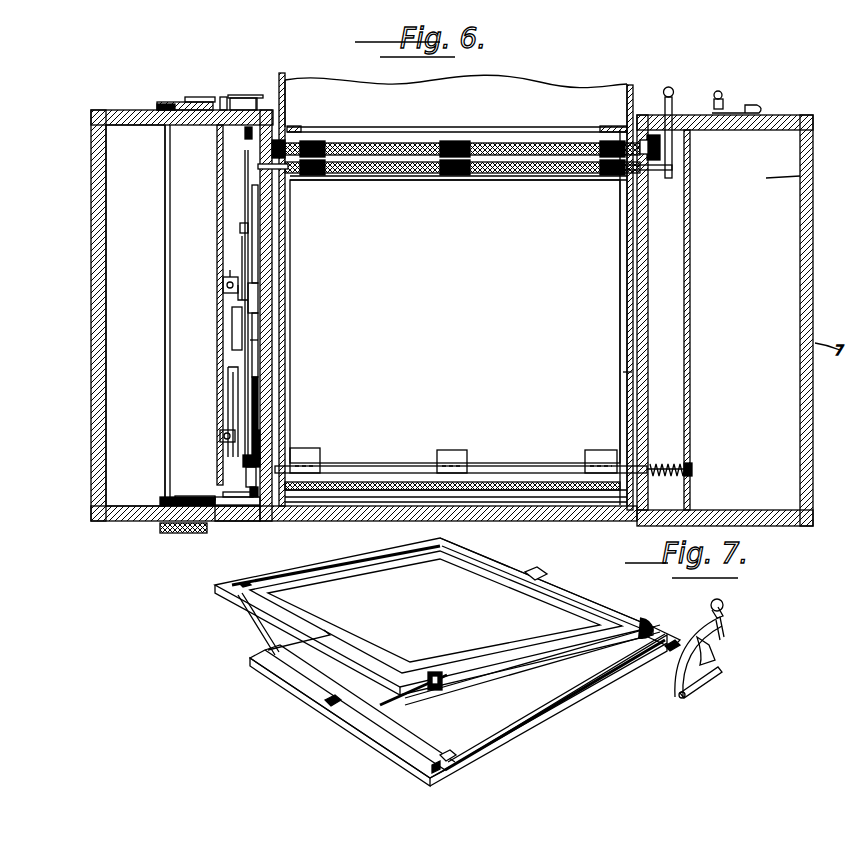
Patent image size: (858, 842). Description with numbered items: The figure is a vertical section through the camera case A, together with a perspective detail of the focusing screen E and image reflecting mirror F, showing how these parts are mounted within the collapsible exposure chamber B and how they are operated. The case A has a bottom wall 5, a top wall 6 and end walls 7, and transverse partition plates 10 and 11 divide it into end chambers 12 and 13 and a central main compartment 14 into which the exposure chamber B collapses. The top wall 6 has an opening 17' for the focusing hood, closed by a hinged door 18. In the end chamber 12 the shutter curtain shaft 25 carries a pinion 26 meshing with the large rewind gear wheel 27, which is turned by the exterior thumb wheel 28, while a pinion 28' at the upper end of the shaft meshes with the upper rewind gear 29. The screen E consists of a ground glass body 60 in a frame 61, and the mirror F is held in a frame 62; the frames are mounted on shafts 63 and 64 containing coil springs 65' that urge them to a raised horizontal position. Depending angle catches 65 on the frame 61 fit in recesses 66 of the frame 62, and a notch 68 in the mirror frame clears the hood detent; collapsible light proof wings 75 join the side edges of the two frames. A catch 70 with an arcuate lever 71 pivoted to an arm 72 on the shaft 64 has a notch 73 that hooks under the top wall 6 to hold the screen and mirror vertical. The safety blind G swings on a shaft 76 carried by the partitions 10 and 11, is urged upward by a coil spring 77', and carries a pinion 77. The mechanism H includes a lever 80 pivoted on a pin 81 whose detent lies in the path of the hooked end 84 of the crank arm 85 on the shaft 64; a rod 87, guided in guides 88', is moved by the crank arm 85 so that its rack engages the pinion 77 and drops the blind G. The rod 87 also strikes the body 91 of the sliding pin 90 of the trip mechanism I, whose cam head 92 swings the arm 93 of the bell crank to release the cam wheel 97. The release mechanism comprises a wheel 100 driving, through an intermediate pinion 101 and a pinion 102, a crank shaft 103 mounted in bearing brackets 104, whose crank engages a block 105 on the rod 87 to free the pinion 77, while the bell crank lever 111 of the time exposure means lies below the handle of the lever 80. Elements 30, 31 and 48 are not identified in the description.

In FIG. 6, the bottom wall 5 is at (266, 521).
In FIG. 6, the top wall 6 is at (128, 112).
In FIG. 6, the end walls 7 is at (92, 306).
In FIG. 6, the partition plate 10 is at (272, 416).
In FIG. 6, the partition plate 11 is at (690, 300).
In FIG. 6, the end chamber 12 is at (152, 229).
In FIG. 6, the end chamber 13 is at (815, 176).
In FIG. 6, the central main compartment 14 is at (648, 224).
In FIG. 6, the opening 17' is at (644, 291).
In FIG. 6, the hinged door 18 is at (576, 88).
In FIG. 6, the shaft 25 is at (166, 380).
In FIG. 6, the pinion 26 is at (165, 497).
In FIG. 6, the gear wheel 27 is at (160, 501).
In FIG. 6, the thumb wheel 28 is at (187, 537).
In FIG. 6, the pinion 28' is at (165, 95).
In FIG. 6, the upper rewind gear 29 is at (210, 127).
In FIG. 6, the rail 30 is at (330, 481).
In FIG. 6, the rail 31 is at (296, 128).
In FIG. 6, the frame member 48 is at (627, 298).
In FIG. 7, the ground glass body 60 is at (490, 578).
In FIG. 7, the frame 61 is at (540, 578).
In FIG. 7, the frame 62 is at (520, 725).
In FIG. 6, the shaft 63 is at (430, 143).
In FIG. 7, the shaft 63 is at (597, 604).
In FIG. 6, the shaft 64 is at (558, 176).
In FIG. 7, the shaft 64 is at (668, 664).
In FIG. 7, the angle catches 65 is at (231, 576).
In FIG. 6, the coil springs 65' is at (449, 140).
In FIG. 7, the recesses 66 is at (450, 758).
In FIG. 7, the notch 68 is at (330, 706).
In FIG. 6, the catch 70 is at (673, 100).
In FIG. 7, the catch 70 is at (723, 630).
In FIG. 6, the arcuate lever 71 is at (673, 143).
In FIG. 7, the arcuate lever 71 is at (697, 652).
In FIG. 6, the arm 72 is at (673, 168).
In FIG. 7, the arm 72 is at (696, 684).
In FIG. 7, the notch 73 is at (705, 625).
In FIG. 7, the collapsible wings 75 is at (252, 626).
In FIG. 6, the shaft 76 is at (540, 467).
In FIG. 7, the shaft 76 is at (520, 665).
In FIG. 6, the pinion 77 is at (221, 458).
In FIG. 6, the coil spring 77' is at (671, 454).
In FIG. 6, the lever 80 is at (272, 250).
In FIG. 6, the pivot pin 81 is at (258, 336).
In FIG. 6, the hooked end 84 is at (250, 497).
In FIG. 6, the crank arm 85 is at (256, 190).
In FIG. 6, the rod 87 is at (242, 256).
In FIG. 6, the guides 88' is at (217, 228).
In FIG. 6, the sliding pin 90 is at (245, 140).
In FIG. 6, the body 91 is at (244, 158).
In FIG. 6, the cam head 92 is at (251, 98).
In FIG. 6, the arm 93 is at (225, 105).
In FIG. 6, the cam wheel 97 is at (206, 101).
In FIG. 6, the wheel 100 is at (228, 490).
In FIG. 6, the intermediate pinion 101 is at (222, 493).
In FIG. 6, the pinion 102 is at (226, 521).
In FIG. 6, the crank shaft 103 is at (228, 378).
In FIG. 6, the bearing brackets 104 is at (223, 286).
In FIG. 6, the block 105 is at (232, 330).
In FIG. 6, the bell crank lever 111 is at (258, 442).
In FIG. 6, the camera case A is at (814, 238).
In FIG. 6, the collapsible exposure chamber B is at (632, 373).
In FIG. 7, the focusing screen E is at (434, 616).
In FIG. 7, the image reflecting mirror F is at (458, 710).
In FIG. 6, the safety blind G is at (455, 321).
In FIG. 6, the operating mechanism H is at (258, 346).
In FIG. 6, the shutter trip mechanism I is at (258, 100).